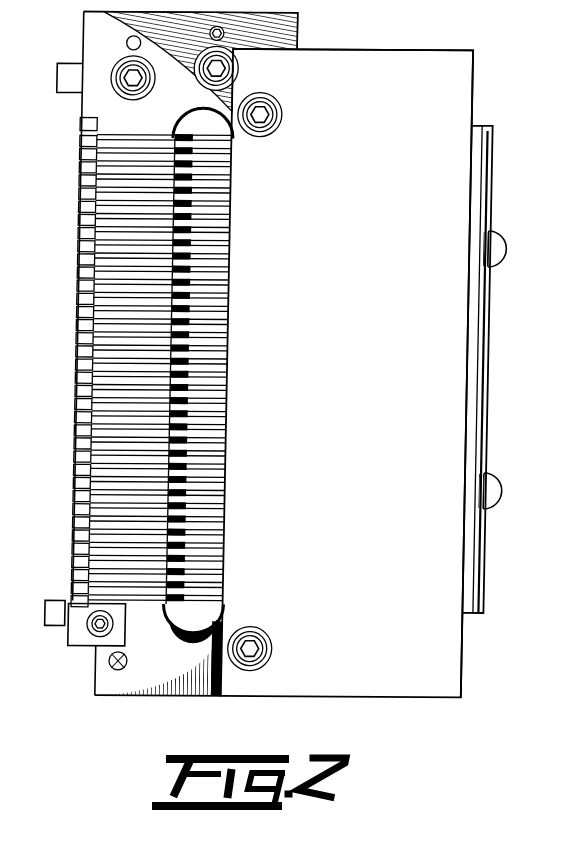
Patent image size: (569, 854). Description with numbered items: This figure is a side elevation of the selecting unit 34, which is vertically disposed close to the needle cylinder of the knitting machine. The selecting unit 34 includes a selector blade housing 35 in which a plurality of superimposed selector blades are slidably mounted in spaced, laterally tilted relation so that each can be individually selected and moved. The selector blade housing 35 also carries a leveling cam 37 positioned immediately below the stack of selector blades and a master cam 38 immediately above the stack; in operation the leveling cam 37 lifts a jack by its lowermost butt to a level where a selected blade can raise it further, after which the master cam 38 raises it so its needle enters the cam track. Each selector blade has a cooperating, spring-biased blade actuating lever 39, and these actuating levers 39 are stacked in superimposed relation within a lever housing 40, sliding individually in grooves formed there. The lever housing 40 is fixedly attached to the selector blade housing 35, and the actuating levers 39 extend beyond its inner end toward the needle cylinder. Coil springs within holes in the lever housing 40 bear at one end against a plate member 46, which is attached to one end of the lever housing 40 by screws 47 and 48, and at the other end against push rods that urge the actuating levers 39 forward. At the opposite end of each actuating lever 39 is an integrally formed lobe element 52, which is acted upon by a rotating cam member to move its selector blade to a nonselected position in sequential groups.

The selecting unit 34 is at (478, 80).
The selector blade housing 35 is at (298, 34).
The leveling cam 37 is at (66, 600).
The master cam 38 is at (58, 81).
The blade actuating lever 39 is at (243, 136).
The lever housing 40 is at (446, 672).
The plate member 46 is at (479, 606).
The screw 47 is at (500, 258).
The screw 48 is at (498, 498).
The lobe element 52 is at (178, 584).